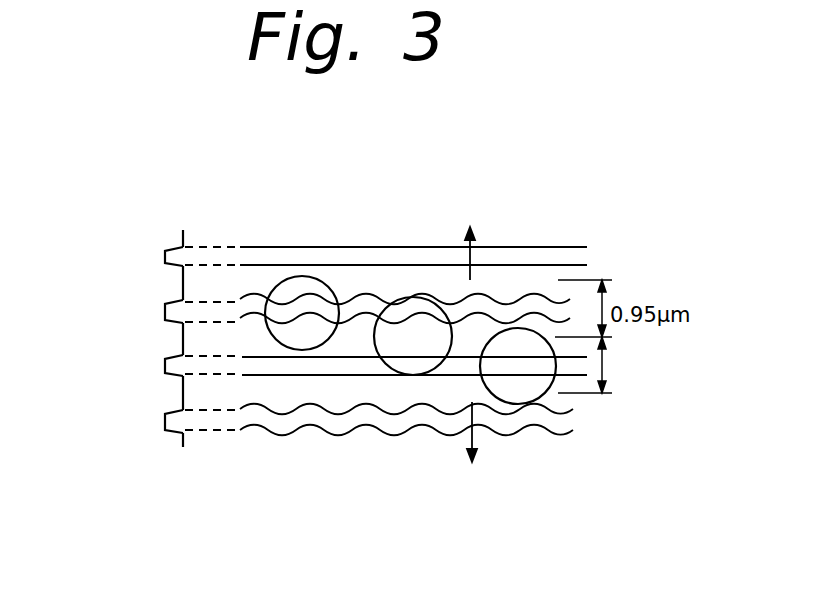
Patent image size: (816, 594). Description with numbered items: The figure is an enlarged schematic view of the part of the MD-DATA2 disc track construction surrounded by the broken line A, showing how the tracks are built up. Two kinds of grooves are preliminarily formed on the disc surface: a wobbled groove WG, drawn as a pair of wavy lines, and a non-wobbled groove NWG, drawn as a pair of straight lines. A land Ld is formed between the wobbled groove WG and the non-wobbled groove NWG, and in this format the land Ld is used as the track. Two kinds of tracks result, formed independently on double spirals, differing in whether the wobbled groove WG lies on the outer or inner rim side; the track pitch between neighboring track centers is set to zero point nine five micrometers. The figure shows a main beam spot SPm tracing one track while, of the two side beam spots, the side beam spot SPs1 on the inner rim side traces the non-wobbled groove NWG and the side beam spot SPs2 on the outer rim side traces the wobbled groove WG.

The non-wobbled groove NWG is at (165, 256).
The wobbled groove WG is at (165, 311).
The land Ld is at (183, 282).
The side beam spot SPs2 is at (283, 278).
The main beam spot SPm is at (383, 300).
The side beam spot SPs1 is at (528, 402).
The broken line A is at (310, 183).